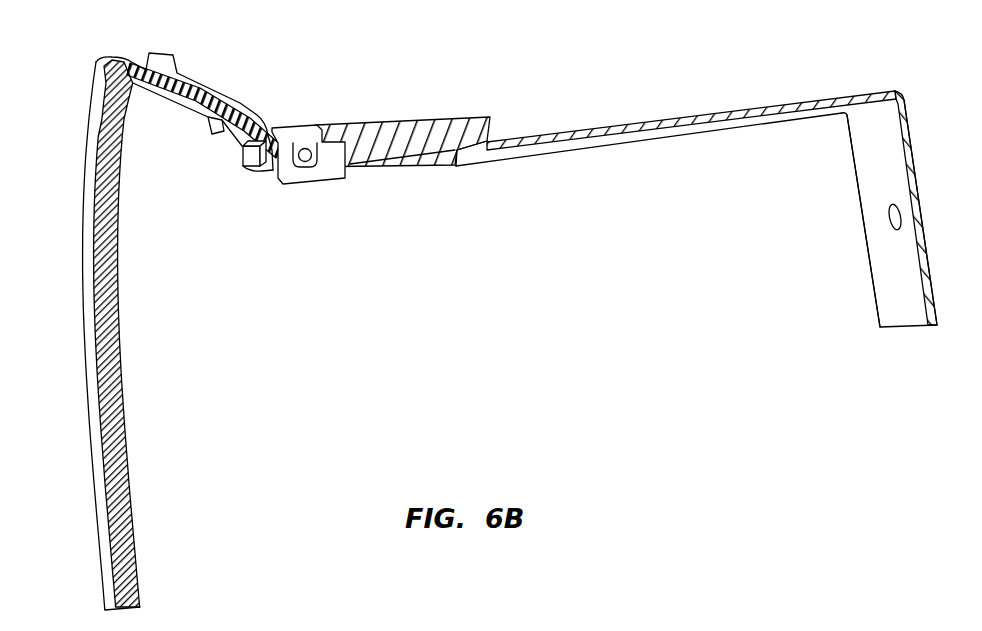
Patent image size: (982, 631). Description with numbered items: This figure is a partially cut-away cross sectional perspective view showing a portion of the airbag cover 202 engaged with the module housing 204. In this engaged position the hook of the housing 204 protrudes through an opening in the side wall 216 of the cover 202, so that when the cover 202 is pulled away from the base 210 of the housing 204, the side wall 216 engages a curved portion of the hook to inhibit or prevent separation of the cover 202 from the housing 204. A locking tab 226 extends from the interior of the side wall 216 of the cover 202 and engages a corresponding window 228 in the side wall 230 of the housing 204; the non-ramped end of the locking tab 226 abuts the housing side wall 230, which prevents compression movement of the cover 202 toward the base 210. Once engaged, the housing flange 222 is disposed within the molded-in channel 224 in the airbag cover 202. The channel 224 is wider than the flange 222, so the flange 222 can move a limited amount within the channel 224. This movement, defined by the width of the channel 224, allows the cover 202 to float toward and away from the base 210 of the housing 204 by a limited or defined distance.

The airbag cover 202 is at (82, 149).
The module housing 204 is at (902, 90).
The base 210 is at (880, 274).
The side wall 216 is at (395, 123).
The housing flange 222 is at (283, 181).
The molded-in channel 224 is at (312, 150).
The locking tab 226 is at (437, 165).
The window 228 is at (456, 170).
The side wall 230 is at (700, 112).